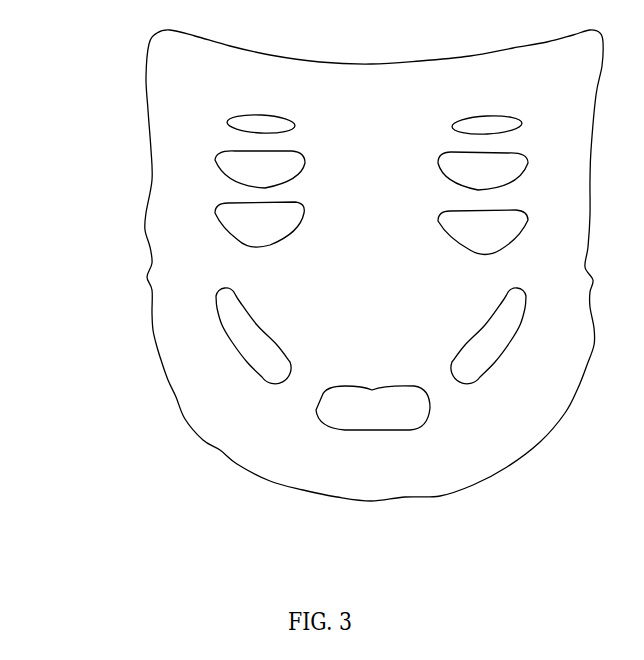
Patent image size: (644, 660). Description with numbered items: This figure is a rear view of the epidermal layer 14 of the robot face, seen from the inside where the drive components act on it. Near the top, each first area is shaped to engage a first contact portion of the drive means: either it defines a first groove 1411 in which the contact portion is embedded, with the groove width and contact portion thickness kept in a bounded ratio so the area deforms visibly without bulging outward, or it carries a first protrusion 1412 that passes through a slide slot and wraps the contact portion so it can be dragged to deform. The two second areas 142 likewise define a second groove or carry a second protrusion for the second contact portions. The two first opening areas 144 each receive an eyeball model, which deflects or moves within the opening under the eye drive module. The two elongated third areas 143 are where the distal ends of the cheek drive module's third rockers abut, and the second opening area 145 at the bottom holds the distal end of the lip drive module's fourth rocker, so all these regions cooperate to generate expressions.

The absorbent body outline 14 is at (374, 265).
The first groove 1411 is at (250, 121).
The first protrusion 1412 is at (487, 125).
The second areas 142 is at (253, 168).
The third areas 143 is at (233, 312).
The first opening areas 144 is at (247, 225).
The second opening area 145 is at (343, 413).